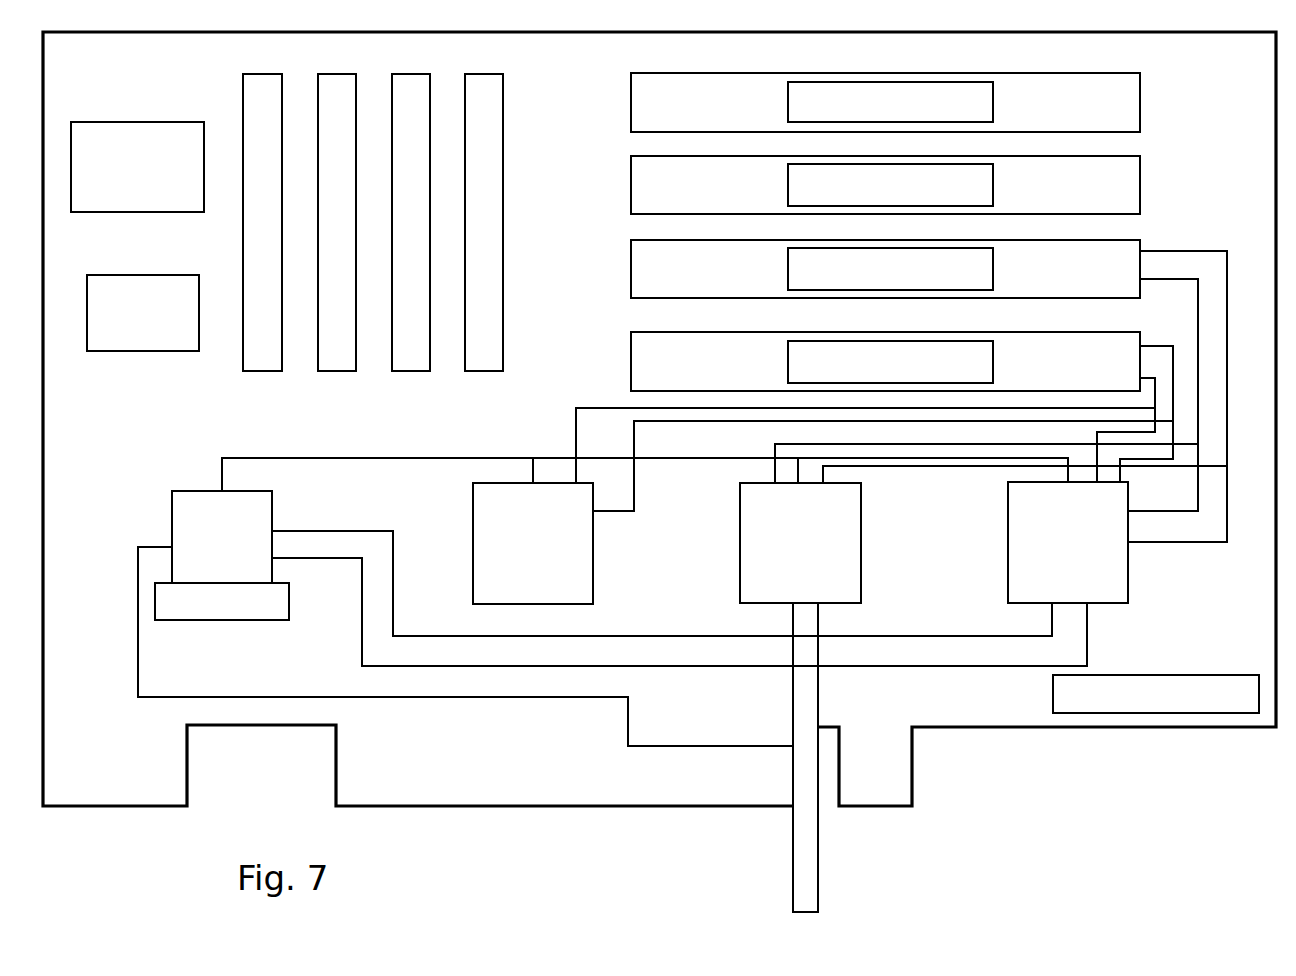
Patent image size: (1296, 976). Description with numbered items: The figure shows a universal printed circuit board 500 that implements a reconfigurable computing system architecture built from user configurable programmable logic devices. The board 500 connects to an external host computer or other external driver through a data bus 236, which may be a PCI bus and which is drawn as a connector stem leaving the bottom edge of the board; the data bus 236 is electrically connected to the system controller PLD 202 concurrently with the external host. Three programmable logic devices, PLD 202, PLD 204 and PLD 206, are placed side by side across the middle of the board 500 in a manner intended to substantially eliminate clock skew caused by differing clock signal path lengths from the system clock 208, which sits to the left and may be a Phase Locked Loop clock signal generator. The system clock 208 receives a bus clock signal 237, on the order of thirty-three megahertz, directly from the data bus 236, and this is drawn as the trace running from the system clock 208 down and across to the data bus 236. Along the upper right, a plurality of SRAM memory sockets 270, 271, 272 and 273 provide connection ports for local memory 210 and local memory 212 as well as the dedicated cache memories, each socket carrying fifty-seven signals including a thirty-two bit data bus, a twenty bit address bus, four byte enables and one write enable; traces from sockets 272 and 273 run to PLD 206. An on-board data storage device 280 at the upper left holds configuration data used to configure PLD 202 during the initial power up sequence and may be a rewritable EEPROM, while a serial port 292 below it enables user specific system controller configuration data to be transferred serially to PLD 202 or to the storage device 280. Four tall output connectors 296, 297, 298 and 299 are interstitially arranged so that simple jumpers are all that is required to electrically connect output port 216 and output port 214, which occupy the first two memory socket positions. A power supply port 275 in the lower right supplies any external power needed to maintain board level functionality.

The printed circuit board 500 is at (112, 69).
The on-board data storage device 280 is at (137, 167).
The serial port 292 is at (143, 313).
The output connector 296 is at (260, 362).
The output connector 297 is at (333, 359).
The output connector 298 is at (413, 354).
The output connector 299 is at (477, 354).
The SRAM memory socket 270 is at (885, 102).
The SRAM memory socket 271 is at (885, 185).
The SRAM memory socket 272 is at (885, 269).
The SRAM memory socket 273 is at (885, 361).
The output port 214 is at (890, 102).
The output port 216 is at (890, 185).
The local memory 212 is at (890, 269).
The local memory 210 is at (890, 362).
The system controller PLD 202 is at (800, 543).
The PLD 204 is at (533, 543).
The PLD 206 is at (1068, 542).
The system clock 208 is at (222, 555).
The power supply port 275 is at (1156, 694).
The data bus 236 is at (805, 888).
The bus clock signal 237 is at (437, 698).